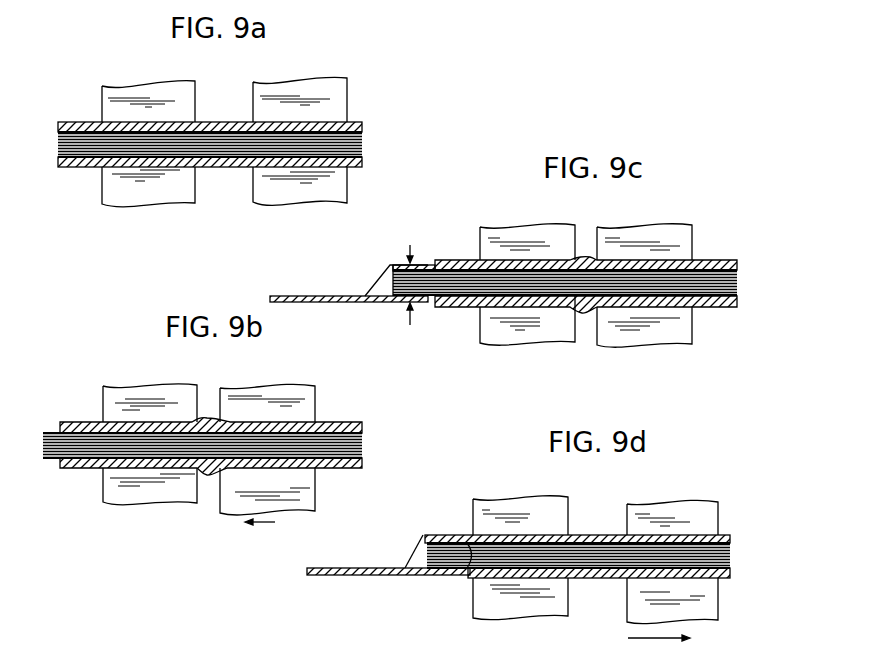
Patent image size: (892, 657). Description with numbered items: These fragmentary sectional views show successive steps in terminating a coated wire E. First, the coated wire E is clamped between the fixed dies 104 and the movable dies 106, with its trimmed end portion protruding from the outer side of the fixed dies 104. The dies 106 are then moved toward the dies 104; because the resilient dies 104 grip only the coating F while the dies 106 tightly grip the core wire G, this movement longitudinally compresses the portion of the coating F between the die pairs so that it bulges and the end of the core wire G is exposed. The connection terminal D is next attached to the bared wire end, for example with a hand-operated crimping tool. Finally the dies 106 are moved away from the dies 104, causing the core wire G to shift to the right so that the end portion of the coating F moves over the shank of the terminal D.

In FIG. 9a, the fixed dies 104 is at (173, 97).
In FIG. 9b, the fixed dies 104 is at (172, 400).
In FIG. 9c, the fixed dies 104 is at (533, 240).
In FIG. 9d, the fixed dies 104 is at (525, 510).
In FIG. 9a, the movable dies 106 is at (313, 95).
In FIG. 9b, the movable dies 106 is at (278, 398).
In FIG. 9c, the movable dies 106 is at (648, 240).
In FIG. 9d, the movable dies 106 is at (678, 513).
In FIG. 9a, the coated wire E is at (354, 119).
In FIG. 9b, the core wire G is at (360, 442).
In FIG. 9b, the coating F is at (337, 465).
In FIG. 9c, the connection terminal D is at (353, 302).
In FIG. 9d, the connection terminal D is at (387, 575).